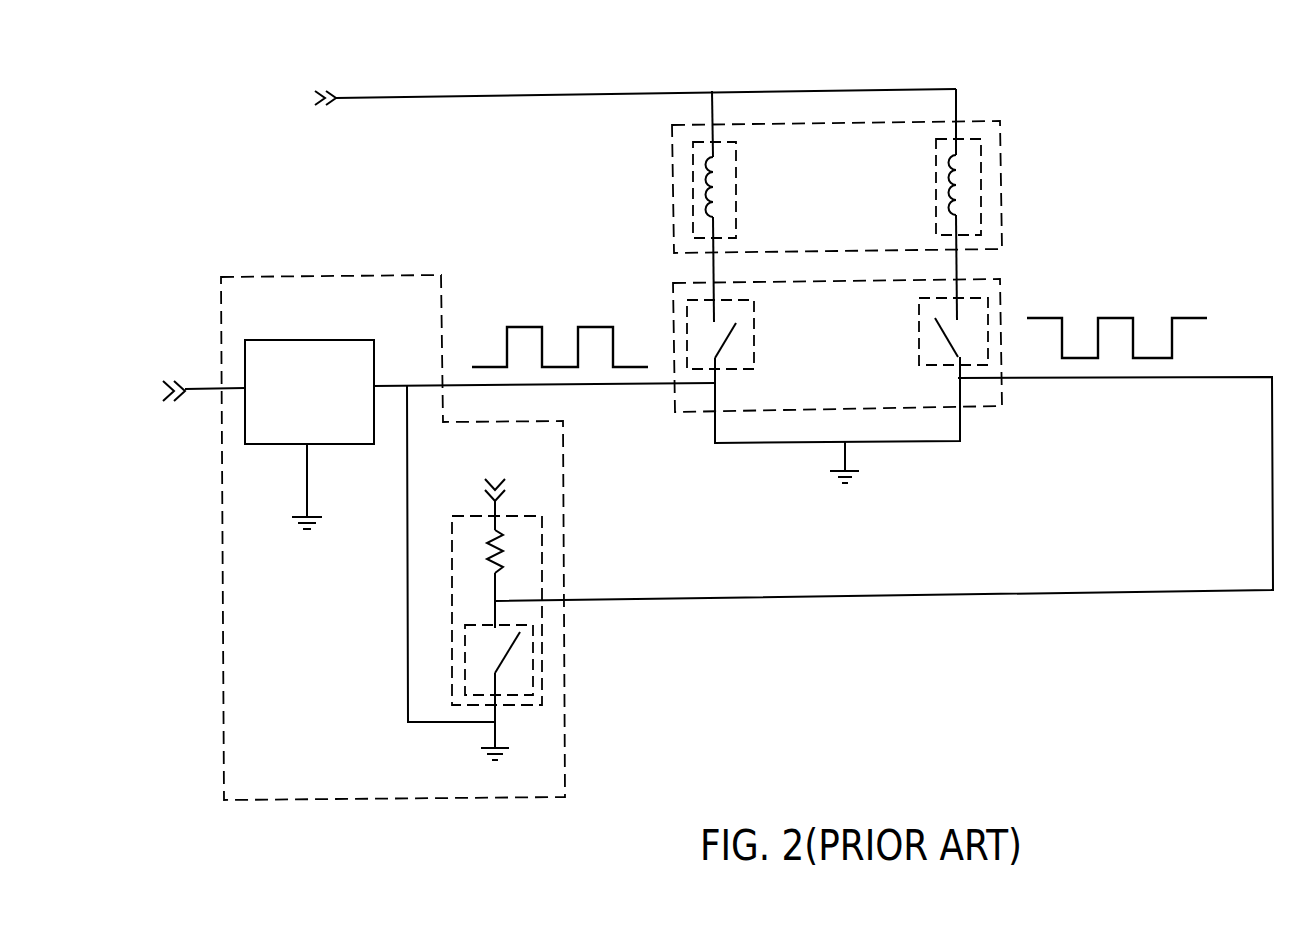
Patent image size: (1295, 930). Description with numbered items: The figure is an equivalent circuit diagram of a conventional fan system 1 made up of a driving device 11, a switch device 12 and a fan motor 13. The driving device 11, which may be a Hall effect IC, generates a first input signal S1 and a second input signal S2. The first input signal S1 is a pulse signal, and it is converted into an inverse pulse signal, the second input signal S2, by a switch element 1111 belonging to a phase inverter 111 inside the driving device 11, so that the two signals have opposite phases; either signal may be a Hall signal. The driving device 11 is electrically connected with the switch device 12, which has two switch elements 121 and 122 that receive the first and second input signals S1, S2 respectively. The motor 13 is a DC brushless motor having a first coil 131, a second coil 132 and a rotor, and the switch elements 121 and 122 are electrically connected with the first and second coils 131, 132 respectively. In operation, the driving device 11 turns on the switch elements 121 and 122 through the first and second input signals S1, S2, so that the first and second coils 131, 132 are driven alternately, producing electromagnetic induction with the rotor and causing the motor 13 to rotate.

The fan system 1 is at (141, 72).
The driving device 11 is at (236, 307).
The phase inverter 111 is at (542, 522).
The switch element 1111 is at (533, 657).
The switch device 12 is at (1005, 406).
The switch element 121 is at (697, 313).
The switch element 122 is at (996, 309).
The fan motor 13 is at (1002, 123).
The first coil 131 is at (700, 167).
The second coil 132 is at (970, 214).
The first input signal S1 is at (577, 324).
The second input signal S2 is at (1115, 316).